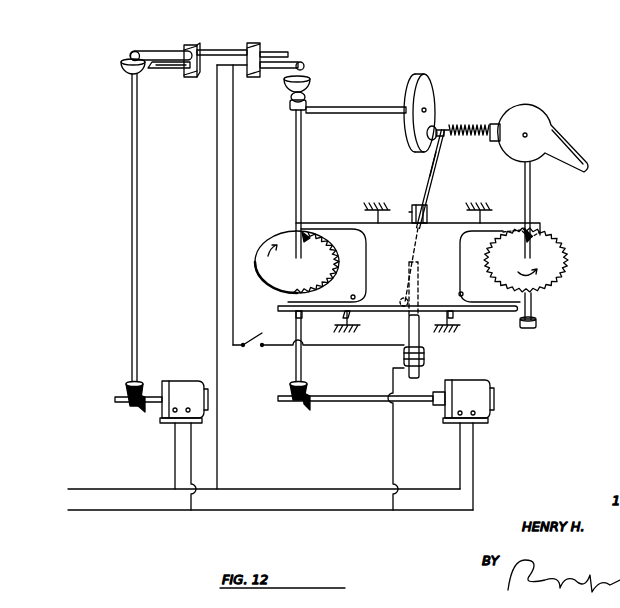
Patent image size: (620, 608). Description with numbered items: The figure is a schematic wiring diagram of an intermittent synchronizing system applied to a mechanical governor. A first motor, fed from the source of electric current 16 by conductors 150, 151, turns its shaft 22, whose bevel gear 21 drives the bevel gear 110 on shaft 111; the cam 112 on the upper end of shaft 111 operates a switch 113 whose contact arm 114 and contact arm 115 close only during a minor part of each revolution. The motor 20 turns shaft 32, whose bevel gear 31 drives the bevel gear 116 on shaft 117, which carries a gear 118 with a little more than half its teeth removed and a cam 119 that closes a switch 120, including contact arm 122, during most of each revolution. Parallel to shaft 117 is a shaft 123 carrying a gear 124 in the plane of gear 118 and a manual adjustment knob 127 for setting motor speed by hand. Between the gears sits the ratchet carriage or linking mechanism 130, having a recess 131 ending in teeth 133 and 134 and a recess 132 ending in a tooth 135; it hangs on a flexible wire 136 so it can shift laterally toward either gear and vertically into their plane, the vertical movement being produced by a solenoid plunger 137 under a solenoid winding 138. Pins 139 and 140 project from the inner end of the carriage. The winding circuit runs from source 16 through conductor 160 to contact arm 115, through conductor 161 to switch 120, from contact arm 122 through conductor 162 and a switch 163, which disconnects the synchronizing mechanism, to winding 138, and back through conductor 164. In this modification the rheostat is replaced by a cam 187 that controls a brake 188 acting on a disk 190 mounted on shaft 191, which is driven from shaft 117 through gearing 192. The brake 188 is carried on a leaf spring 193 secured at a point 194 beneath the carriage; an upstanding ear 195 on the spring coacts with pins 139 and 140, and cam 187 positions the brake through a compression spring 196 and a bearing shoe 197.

The source of electric current 16 is at (68, 481).
The motor 20 is at (472, 407).
The bevel gear 21 is at (138, 408).
The shaft of motor 15 22 is at (161, 392).
The bevel gear 31 is at (306, 410).
The shaft of motor 20 32 is at (362, 396).
The bevel gear 110 is at (129, 387).
The shaft 111 is at (131, 268).
The cam 112 is at (121, 68).
The switch 113 is at (193, 44).
The contact arm 114 is at (155, 51).
The contact arm 115 is at (165, 69).
The bevel gear 116 is at (292, 389).
The shaft 117 is at (302, 164).
The gear 118 is at (302, 285).
The cam 119 is at (307, 82).
The switch 120 is at (256, 42).
The contact arm 122 is at (302, 62).
The shaft 123 is at (531, 190).
The gear 124 is at (552, 265).
The manual adjustment knob 127 is at (538, 326).
The ratchet carriage or linking mechanism 130 is at (400, 260).
The cutaway portion (recess) 131 is at (355, 297).
The cutaway portion (recess) 132 is at (460, 295).
The tooth 133 is at (316, 262).
The tooth 134 is at (278, 308).
The tooth 135 is at (548, 232).
The flexible wire 136 is at (364, 211).
The solenoid plunger 137 is at (420, 342).
The solenoid winding 138 is at (424, 362).
The pin (projection) 139 is at (405, 212).
The pin (projection) 140 is at (428, 210).
The conductor 150 is at (174, 458).
The conductor 151 is at (192, 452).
The conductor 160 is at (216, 280).
The conductor 161 is at (226, 49).
The conductor 162 is at (234, 150).
The switch 163 is at (253, 341).
The conductor 164 is at (394, 452).
The cam 187 is at (569, 134).
The brake 188 is at (442, 127).
The disk 190 is at (426, 80).
The shaft 191 is at (374, 108).
The gearing 192 is at (307, 104).
The leaf spring 193 is at (437, 168).
The securing point of leaf spring 194 is at (405, 308).
The upstanding ear 195 is at (432, 162).
The compression spring 196 is at (481, 126).
The bearing shoe 197 is at (497, 143).